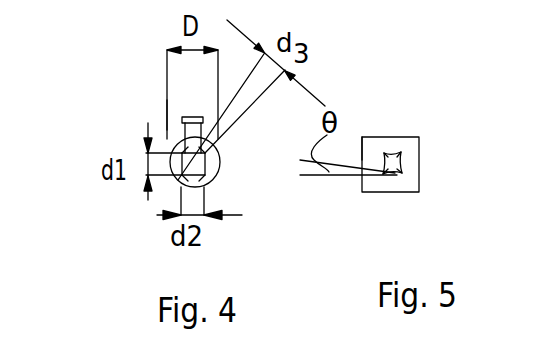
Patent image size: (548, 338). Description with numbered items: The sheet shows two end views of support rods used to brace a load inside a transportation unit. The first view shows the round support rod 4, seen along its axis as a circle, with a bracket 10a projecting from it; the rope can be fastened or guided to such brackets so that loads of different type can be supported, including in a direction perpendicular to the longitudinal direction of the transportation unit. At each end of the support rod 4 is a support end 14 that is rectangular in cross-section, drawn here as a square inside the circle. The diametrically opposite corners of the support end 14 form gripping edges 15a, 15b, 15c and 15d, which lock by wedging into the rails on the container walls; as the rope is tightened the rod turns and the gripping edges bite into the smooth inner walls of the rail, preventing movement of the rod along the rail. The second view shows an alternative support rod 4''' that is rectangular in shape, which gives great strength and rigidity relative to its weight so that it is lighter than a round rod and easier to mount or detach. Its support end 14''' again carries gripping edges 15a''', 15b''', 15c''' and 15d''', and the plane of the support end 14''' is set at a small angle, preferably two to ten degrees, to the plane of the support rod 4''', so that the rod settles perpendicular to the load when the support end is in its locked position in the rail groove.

In FIG. 4, the support rod 4 is at (106, 126).
In FIG. 4, the bracket 10a is at (182, 120).
In FIG. 4, the support end 14 is at (229, 175).
In FIG. 4, the gripping edge 15a is at (251, 132).
In FIG. 4, the gripping edge 15b is at (244, 216).
In FIG. 4, the gripping edge 15c is at (132, 212).
In FIG. 4, the gripping edge 15d is at (136, 120).
In FIG. 5, the support rod 4''' is at (427, 91).
In FIG. 5, the support end 14''' is at (460, 145).
In FIG. 5, the gripping edge 15a''' is at (460, 117).
In FIG. 5, the gripping edge 15b''' is at (466, 190).
In FIG. 5, the gripping edge 15c''' is at (353, 210).
In FIG. 5, the gripping edge 15d''' is at (384, 104).